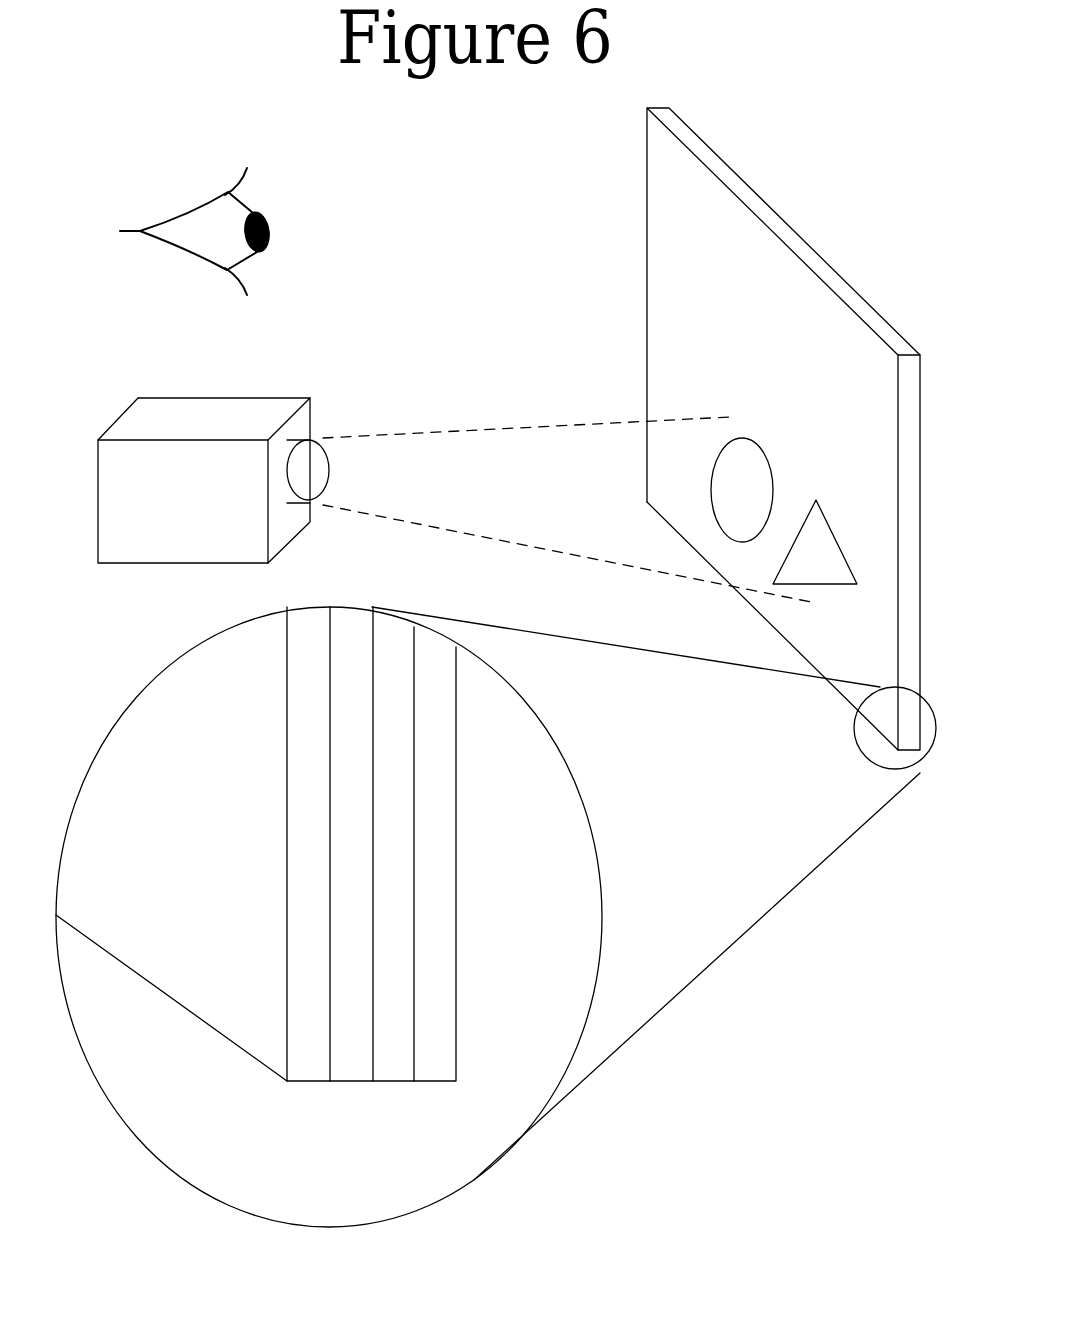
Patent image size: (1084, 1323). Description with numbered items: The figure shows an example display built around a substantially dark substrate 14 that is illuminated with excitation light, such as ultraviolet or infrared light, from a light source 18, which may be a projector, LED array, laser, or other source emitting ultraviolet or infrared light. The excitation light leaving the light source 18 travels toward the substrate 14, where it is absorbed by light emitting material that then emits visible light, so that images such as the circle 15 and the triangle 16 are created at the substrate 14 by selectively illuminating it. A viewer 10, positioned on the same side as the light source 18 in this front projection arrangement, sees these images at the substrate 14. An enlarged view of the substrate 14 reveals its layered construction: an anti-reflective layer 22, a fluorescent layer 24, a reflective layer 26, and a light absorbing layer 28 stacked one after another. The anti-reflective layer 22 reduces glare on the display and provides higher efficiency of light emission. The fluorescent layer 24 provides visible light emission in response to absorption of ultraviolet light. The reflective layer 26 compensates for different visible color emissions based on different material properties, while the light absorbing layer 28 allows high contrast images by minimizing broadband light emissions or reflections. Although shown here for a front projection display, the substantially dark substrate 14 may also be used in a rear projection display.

The viewer 10 is at (245, 190).
The substrate 14 is at (773, 210).
The circle 15 is at (732, 481).
The triangle 16 is at (816, 563).
The light source 18 is at (225, 522).
The anti-reflective layer 22 is at (309, 1060).
The fluorescent layer 24 is at (352, 1060).
The reflective layer 26 is at (393, 1060).
The light absorbing layer 28 is at (435, 1060).